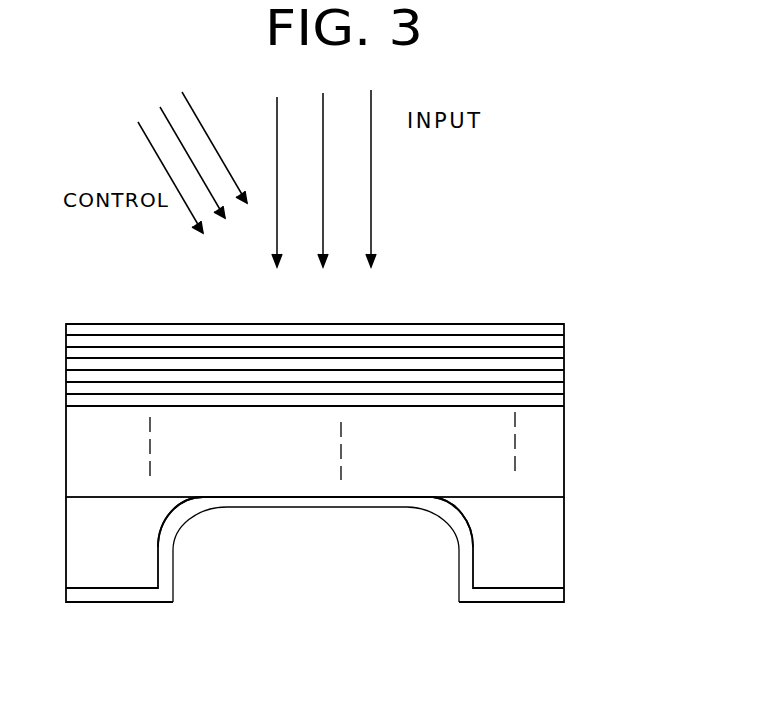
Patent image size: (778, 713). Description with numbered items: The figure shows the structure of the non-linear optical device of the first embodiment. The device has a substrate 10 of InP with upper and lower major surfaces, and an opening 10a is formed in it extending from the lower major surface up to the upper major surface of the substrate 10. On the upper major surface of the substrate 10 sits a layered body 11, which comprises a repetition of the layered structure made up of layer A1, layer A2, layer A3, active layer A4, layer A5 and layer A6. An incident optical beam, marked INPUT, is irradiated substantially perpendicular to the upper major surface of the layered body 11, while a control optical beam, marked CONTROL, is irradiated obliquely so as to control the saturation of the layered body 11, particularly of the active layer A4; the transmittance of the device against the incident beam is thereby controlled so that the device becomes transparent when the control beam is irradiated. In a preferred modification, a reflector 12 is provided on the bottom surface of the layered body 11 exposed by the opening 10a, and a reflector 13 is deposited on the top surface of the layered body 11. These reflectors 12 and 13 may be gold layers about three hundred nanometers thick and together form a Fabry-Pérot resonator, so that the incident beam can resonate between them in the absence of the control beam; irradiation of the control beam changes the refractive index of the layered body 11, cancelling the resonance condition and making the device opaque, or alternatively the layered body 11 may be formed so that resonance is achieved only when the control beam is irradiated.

The substrate 10 is at (551, 568).
The opening 10a is at (335, 556).
The layered body 11 is at (63, 327).
The reflector 12 is at (474, 596).
The reflector 13 is at (174, 323).
The layer A1 is at (565, 341).
The layer A2 is at (565, 352).
The layer A3 is at (565, 363).
The active layer A4 is at (565, 374).
The layer A5 is at (565, 386).
The layer A6 is at (565, 397).